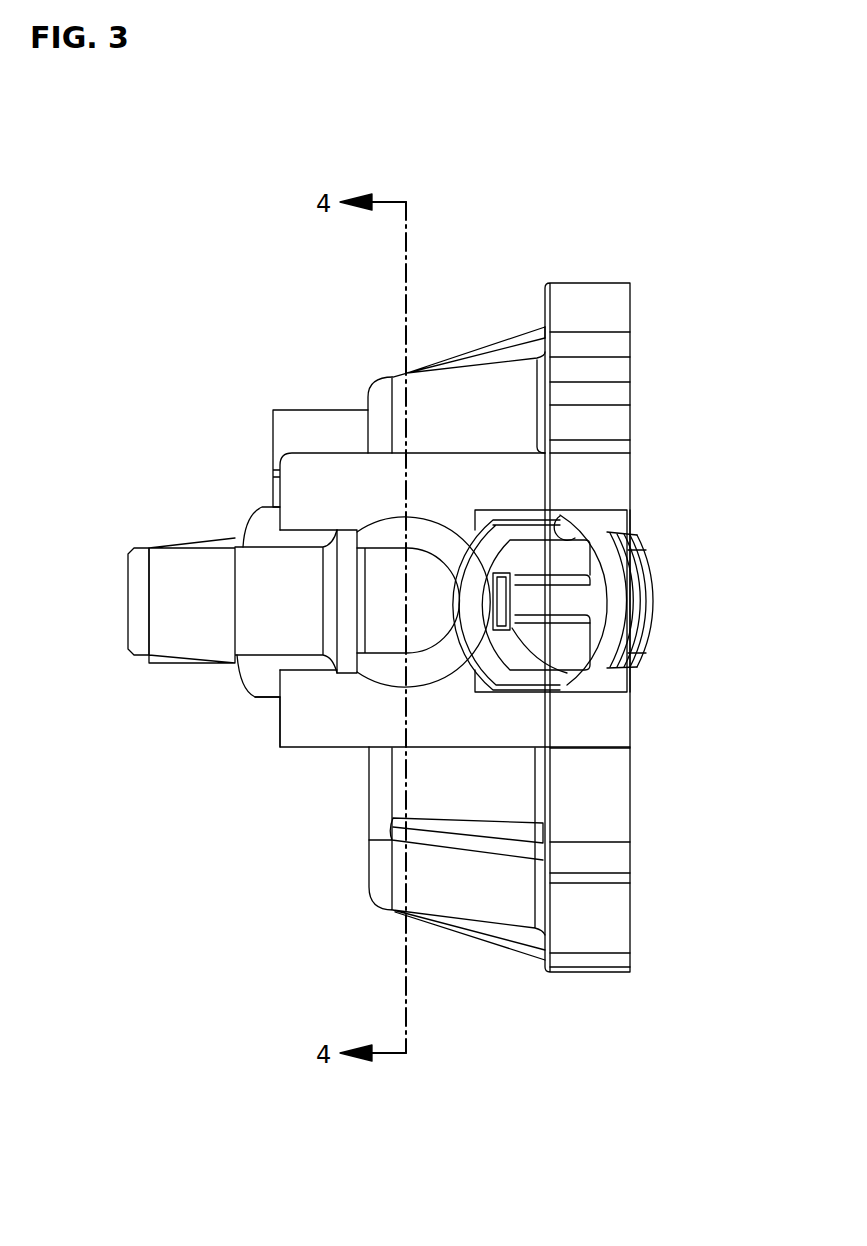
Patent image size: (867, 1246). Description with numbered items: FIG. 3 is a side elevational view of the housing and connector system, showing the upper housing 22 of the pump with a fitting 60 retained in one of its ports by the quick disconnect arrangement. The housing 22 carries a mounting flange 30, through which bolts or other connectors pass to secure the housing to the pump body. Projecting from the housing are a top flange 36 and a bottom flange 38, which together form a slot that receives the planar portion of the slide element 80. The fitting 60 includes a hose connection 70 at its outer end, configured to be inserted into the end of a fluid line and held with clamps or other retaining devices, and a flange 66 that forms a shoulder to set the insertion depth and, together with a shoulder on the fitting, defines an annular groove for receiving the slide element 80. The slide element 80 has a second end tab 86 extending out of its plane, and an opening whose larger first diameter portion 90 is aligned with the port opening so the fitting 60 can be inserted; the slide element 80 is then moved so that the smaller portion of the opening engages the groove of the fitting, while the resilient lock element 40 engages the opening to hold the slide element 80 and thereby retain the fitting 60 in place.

The upper housing 22 is at (182, 398).
The mounting flange 30 is at (587, 303).
The top flange 36 is at (280, 518).
The bottom flange 38 is at (292, 682).
The resilient lock element 40 is at (600, 682).
The fitting 60 is at (180, 518).
The flange 66 is at (430, 540).
The hose connection 70 is at (172, 636).
The slide element 80 is at (255, 712).
The second end tab 86 is at (648, 572).
The larger first diameter portion 90 is at (560, 533).